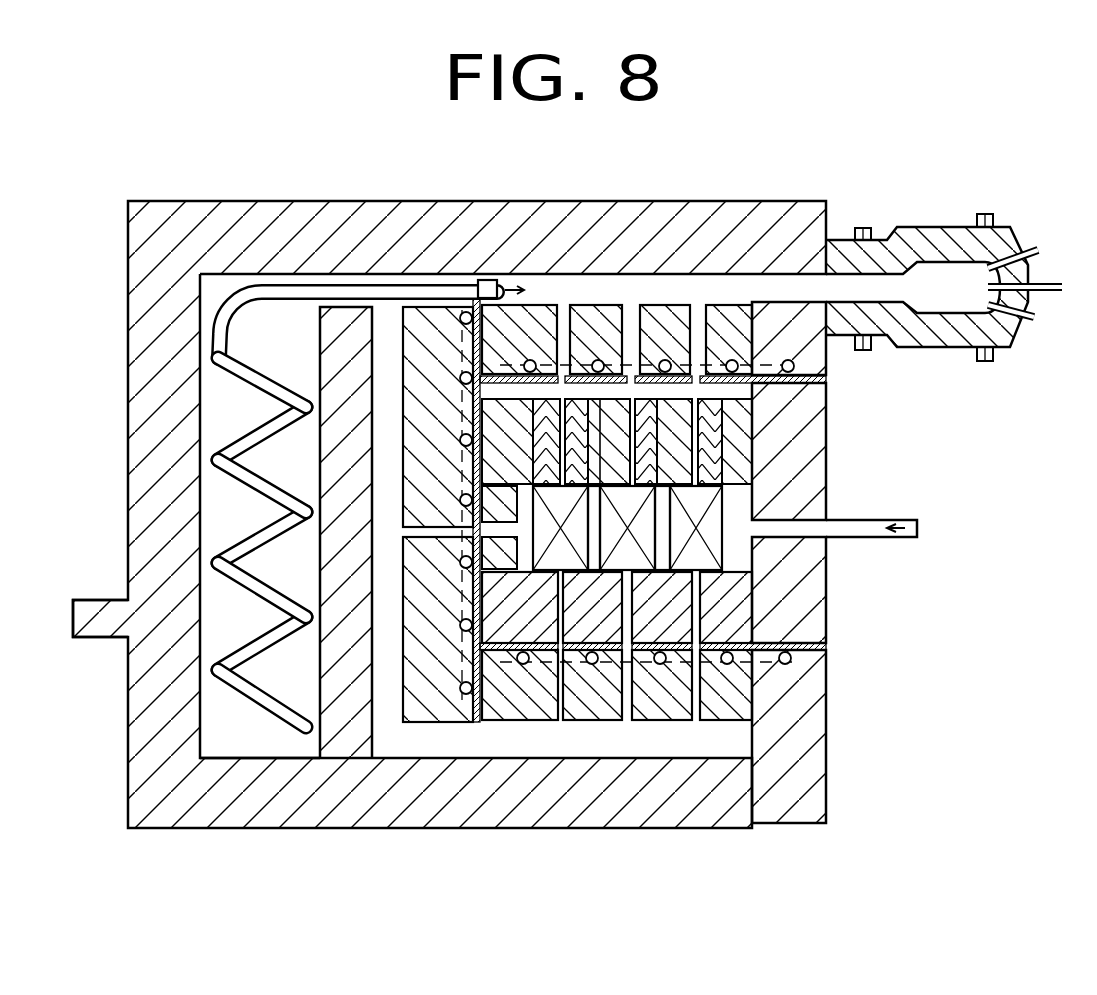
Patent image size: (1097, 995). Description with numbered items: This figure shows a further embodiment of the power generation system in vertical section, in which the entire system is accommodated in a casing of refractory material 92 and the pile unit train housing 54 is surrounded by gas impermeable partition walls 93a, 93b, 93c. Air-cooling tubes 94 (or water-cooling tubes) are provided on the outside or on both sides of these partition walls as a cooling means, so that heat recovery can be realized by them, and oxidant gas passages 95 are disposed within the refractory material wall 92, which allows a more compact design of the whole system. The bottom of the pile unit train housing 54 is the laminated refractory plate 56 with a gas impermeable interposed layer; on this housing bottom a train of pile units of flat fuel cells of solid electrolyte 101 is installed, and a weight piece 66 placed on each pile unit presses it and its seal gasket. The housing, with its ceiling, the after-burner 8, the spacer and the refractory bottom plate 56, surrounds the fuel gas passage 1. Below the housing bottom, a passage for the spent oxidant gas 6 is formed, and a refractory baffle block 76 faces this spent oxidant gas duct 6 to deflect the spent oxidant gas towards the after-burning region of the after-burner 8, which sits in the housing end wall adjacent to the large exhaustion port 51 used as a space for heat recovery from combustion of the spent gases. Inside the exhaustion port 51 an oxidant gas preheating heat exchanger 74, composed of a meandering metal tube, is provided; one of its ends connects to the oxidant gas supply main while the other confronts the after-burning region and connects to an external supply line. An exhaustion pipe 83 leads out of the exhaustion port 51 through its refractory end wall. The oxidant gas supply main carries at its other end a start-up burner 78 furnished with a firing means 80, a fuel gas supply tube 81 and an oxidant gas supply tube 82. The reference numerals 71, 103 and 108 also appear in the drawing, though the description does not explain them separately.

The fuel gas passage 1 is at (745, 550).
The spent oxidant gas duct 6 is at (746, 733).
The after-burner 8 is at (410, 532).
The exhaustion port 51 is at (250, 742).
The pile unit train housing 54 is at (640, 437).
The laminated refractory plate 56 is at (722, 630).
The weight piece 66 is at (723, 457).
The lower block 71 is at (707, 722).
The oxidant gas preheating heat exchanger 74 is at (347, 290).
The refractory baffle block 76 is at (322, 333).
The start-up burner 78 is at (917, 227).
The firing means 80 is at (1039, 251).
The fuel gas supply tube 81 is at (1062, 285).
The oxidant gas supply tube 82 is at (1036, 320).
The exhaustion pipe 83 is at (150, 630).
The casing of refractory material 92 is at (583, 224).
The gas impermeable partition wall 93a is at (829, 380).
The gas impermeable partition wall 93b is at (829, 644).
The gas impermeable partition wall 93c is at (492, 700).
The air-cooling tubes 94 is at (460, 378).
The oxidant gas passages 95 is at (727, 352).
The pile unit of flat fuel cells of solid electrolyte 101 is at (717, 516).
The inlet pipe 103 is at (936, 526).
The outlet pipe 108 is at (502, 279).